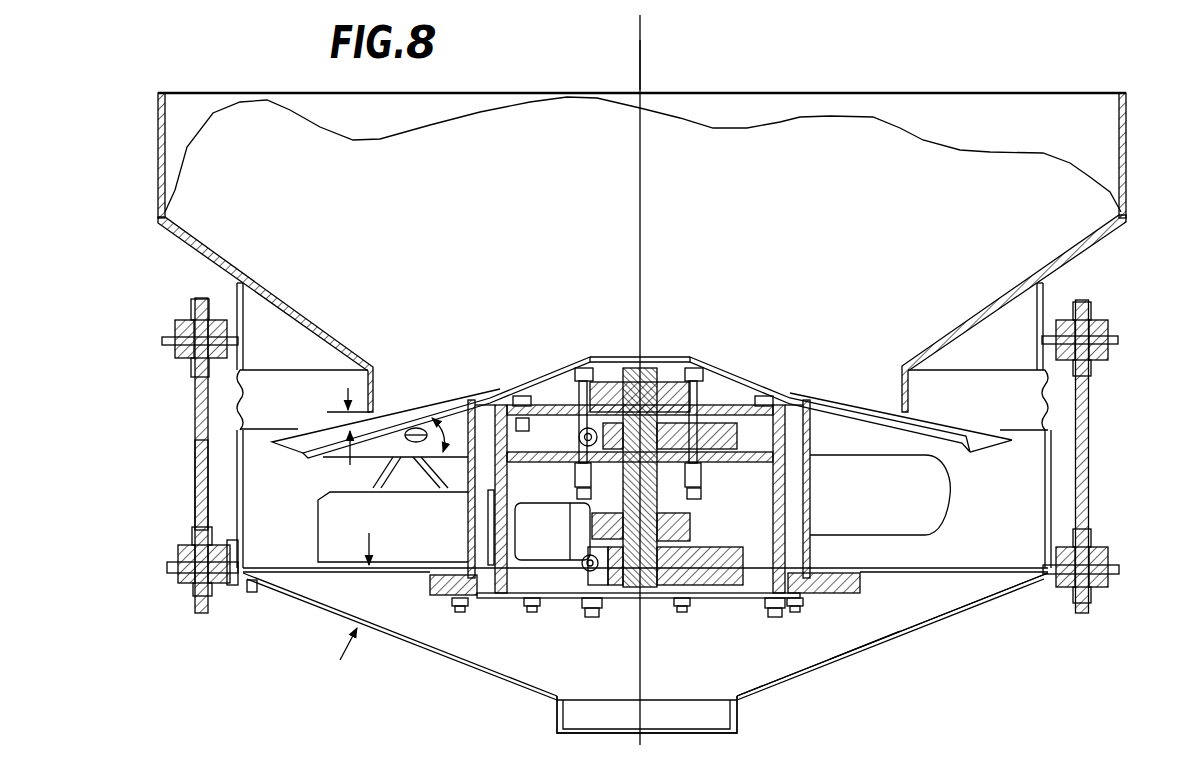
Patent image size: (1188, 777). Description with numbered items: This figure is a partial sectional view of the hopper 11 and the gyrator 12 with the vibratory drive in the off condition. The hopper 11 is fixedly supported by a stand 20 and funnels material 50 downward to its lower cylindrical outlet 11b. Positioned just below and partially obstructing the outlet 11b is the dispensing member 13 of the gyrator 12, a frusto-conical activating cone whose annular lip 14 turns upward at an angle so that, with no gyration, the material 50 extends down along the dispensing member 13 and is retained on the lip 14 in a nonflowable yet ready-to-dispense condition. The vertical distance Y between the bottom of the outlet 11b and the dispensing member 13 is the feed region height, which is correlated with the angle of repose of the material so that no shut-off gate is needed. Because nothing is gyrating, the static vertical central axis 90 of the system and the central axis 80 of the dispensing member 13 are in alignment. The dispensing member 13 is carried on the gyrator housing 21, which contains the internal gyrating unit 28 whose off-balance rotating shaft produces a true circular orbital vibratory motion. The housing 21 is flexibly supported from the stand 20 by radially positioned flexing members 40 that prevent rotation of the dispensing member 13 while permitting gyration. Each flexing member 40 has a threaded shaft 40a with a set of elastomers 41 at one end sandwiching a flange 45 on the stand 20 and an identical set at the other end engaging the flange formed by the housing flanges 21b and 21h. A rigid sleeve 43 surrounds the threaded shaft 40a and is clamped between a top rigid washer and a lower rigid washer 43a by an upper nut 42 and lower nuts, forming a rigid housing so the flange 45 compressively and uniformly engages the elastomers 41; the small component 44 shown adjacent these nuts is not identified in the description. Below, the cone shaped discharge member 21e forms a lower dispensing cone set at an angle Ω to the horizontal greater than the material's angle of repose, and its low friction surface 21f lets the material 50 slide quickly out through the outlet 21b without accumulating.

The hopper 11 is at (155, 91).
The outlet 11b is at (908, 393).
The material 50 is at (585, 229).
The vertical central axis 90 is at (638, 53).
The central axis of dispensing member 80 is at (641, 70).
The dispensing member 13 is at (719, 358).
The annular lip 14 is at (295, 456).
The stand 20 is at (238, 285).
The gyrator housing 21 is at (292, 599).
The gyrator 12 is at (390, 659).
The cone shaped discharge member 21e is at (908, 622).
The low friction surface 21f is at (842, 654).
The flange 21b is at (170, 562).
The flange 21h is at (178, 585).
The flexing members 40 is at (194, 426).
The threaded shaft 40a is at (200, 465).
The elastomers 41 is at (155, 334).
The upper nut 42 is at (195, 310).
The rigid sleeve 43 is at (176, 320).
The lower rigid washer 43a is at (183, 362).
The lower lock nut 44 is at (192, 364).
The flange 45 is at (162, 341).
The internal gyrating unit 28 is at (715, 503).